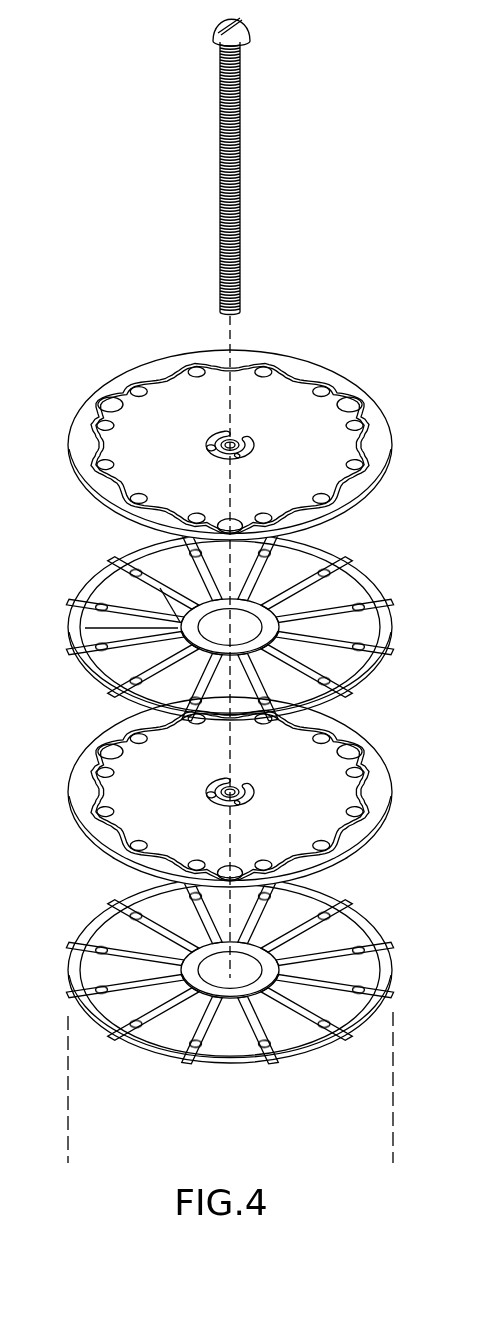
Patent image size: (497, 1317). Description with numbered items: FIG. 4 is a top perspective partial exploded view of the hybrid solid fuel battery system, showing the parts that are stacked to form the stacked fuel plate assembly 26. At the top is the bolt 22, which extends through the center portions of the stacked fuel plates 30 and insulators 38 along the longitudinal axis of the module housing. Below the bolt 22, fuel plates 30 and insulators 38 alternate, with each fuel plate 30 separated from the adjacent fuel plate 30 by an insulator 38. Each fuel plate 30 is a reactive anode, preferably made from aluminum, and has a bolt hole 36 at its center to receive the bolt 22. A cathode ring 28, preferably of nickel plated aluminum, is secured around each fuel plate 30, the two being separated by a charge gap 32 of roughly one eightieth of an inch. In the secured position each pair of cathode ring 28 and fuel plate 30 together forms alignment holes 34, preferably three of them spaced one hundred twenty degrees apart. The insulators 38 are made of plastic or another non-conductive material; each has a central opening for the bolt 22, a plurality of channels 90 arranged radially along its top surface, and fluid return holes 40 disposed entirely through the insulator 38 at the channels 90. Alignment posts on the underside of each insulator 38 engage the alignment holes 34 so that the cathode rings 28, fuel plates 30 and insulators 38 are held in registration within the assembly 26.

The bolt 22 is at (240, 138).
The stacked fuel plate assembly 26 is at (348, 349).
The cathode ring 28 is at (194, 358).
The fuel plate 30 is at (164, 388).
The charge gap 32 is at (377, 430).
The alignment holes 34 is at (107, 405).
The bolt hole 36 is at (213, 434).
The insulator 38 is at (367, 573).
The fluid return holes 40 is at (130, 580).
The channels 90 is at (128, 632).